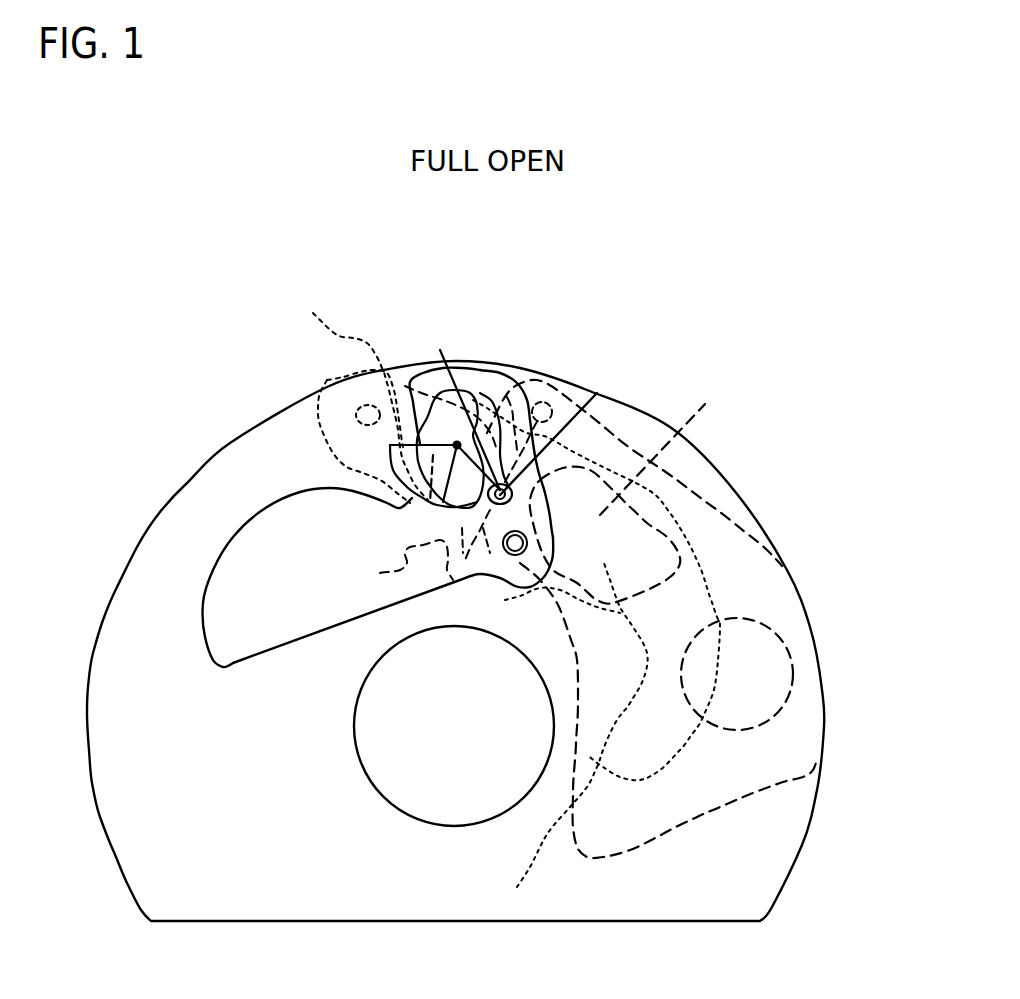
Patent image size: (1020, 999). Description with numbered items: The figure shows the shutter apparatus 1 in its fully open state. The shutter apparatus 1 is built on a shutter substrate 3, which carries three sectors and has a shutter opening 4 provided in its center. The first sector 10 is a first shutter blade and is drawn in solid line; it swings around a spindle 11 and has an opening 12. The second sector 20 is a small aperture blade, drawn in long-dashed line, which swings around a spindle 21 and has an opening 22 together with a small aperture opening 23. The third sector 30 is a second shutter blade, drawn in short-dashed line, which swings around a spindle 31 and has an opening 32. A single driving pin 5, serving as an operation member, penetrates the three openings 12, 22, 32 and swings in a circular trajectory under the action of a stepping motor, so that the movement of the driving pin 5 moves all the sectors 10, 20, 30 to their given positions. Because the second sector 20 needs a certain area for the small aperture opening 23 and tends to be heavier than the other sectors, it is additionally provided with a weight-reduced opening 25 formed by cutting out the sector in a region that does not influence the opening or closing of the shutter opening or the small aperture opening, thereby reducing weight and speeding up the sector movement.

The shutter apparatus 1 is at (200, 408).
The shutter substrate 3 is at (773, 860).
The shutter opening 4 is at (367, 747).
The driving pin 5 is at (597, 393).
The first sector 10 is at (218, 598).
The spindle 11 is at (515, 543).
The opening 12 is at (440, 350).
The second sector 20 is at (770, 592).
The spindle 21 is at (540, 403).
The opening 22 is at (419, 551).
The small aperture opening 23 is at (773, 673).
The weight-reduced opening 25 is at (705, 404).
The third sector 30 is at (596, 656).
The spindle 31 is at (327, 380).
The opening 32 is at (360, 391).